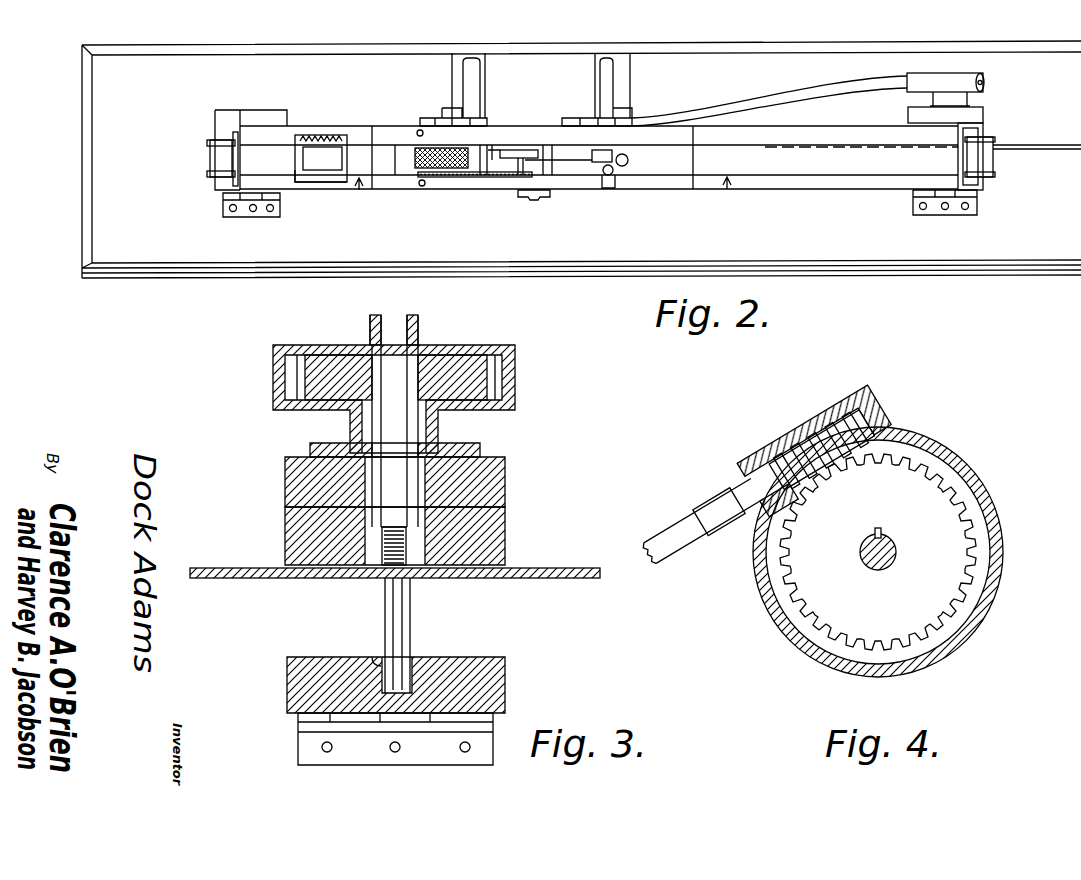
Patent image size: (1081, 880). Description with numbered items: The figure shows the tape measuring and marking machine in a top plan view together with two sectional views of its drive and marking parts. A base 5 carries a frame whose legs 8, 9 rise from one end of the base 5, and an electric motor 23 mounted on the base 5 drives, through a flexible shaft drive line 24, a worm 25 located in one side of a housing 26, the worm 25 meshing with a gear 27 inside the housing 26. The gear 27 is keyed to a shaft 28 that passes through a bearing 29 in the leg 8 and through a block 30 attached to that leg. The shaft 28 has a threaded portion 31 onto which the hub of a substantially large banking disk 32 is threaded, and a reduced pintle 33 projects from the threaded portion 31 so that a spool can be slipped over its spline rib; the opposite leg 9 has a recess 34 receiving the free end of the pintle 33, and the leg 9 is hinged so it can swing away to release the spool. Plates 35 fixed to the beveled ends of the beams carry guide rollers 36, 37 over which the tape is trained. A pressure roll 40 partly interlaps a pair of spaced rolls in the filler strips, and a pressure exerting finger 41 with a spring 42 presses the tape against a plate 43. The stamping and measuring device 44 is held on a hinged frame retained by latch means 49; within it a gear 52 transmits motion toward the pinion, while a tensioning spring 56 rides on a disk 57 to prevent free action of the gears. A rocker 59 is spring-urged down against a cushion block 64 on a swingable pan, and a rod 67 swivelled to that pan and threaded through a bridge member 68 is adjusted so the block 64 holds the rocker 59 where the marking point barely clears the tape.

In FIG. 2, the base 5 is at (161, 258).
In FIG. 3, the leg 8 is at (506, 531).
In FIG. 3, the leg 9 is at (500, 663).
In FIG. 2, the electric motor 23 is at (631, 81).
In FIG. 2, the flexible shaft drive line 24 is at (750, 101).
In FIG. 4, the flexible shaft drive line 24 is at (692, 504).
In FIG. 4, the worm 25 is at (807, 431).
In FIG. 2, the housing 26 is at (955, 75).
In FIG. 3, the housing 26 is at (516, 395).
In FIG. 4, the housing 26 is at (918, 446).
In FIG. 3, the gear 27 is at (490, 372).
In FIG. 4, the gear 27 is at (918, 492).
In FIG. 3, the shaft 28 is at (410, 425).
In FIG. 3, the bearing 29 is at (482, 452).
In FIG. 2, the block 30 is at (985, 115).
In FIG. 3, the block 30 is at (506, 490).
In FIG. 3, the threaded portion 31 is at (385, 580).
In FIG. 2, the banking disk 32 is at (1066, 150).
In FIG. 3, the banking disk 32 is at (560, 568).
In FIG. 3, the pintle 33 is at (412, 626).
In FIG. 3, the recess 34 is at (375, 660).
In FIG. 2, the plate 35 is at (216, 183).
In FIG. 2, the guide roller 36 is at (214, 152).
In FIG. 2, the guide roller 37 is at (994, 160).
In FIG. 2, the pressure roll 40 is at (420, 169).
In FIG. 2, the pressure exerting finger 41 is at (330, 162).
In FIG. 2, the spring 42 is at (318, 136).
In FIG. 2, the plate 43 is at (312, 184).
In FIG. 2, the stamping and measuring device 44 is at (437, 189).
In FIG. 2, the latch means 49 is at (533, 200).
In FIG. 2, the gear 52 is at (478, 178).
In FIG. 2, the tensioning spring 56 is at (493, 146).
In FIG. 2, the disk 57 is at (515, 151).
In FIG. 2, the rocker 59 is at (583, 166).
In FIG. 2, the cushion block 64 is at (606, 176).
In FIG. 2, the rod 67 is at (618, 167).
In FIG. 2, the bridge member 68 is at (610, 190).